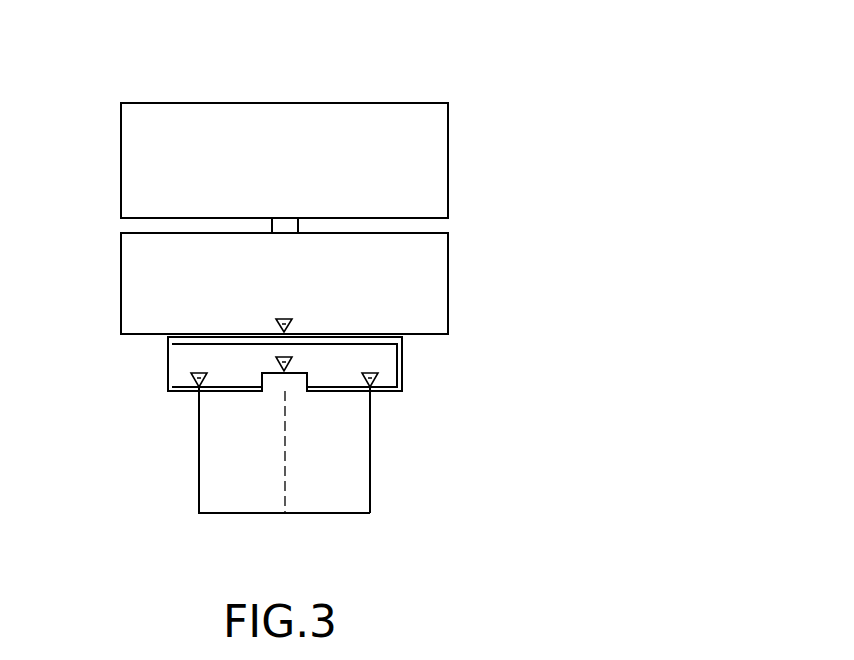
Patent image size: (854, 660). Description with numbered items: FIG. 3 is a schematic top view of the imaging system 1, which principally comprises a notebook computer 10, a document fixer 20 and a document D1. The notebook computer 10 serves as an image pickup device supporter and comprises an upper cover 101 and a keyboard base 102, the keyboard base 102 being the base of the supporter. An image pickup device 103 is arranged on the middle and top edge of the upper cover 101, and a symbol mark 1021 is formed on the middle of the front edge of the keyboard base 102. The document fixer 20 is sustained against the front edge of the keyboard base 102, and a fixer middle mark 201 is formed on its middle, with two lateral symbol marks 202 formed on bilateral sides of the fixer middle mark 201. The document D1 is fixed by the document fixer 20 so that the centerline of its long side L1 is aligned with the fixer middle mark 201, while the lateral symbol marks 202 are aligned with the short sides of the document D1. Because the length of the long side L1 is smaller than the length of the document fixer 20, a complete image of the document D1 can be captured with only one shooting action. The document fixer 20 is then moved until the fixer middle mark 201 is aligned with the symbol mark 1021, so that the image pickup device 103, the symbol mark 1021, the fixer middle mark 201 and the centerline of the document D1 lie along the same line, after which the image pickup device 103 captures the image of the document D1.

The imaging system 1 is at (421, 37).
The notebook computer 10 is at (226, 107).
The upper cover 101 is at (432, 163).
The keyboard base 102 is at (433, 316).
The image pickup device 103 is at (286, 226).
The symbol mark 1021 is at (284, 319).
The document fixer 20 is at (182, 378).
The fixer middle mark 201 is at (285, 357).
The lateral symbol marks 202 is at (199, 380).
The document D1 is at (355, 476).
The long side L1 is at (237, 513).